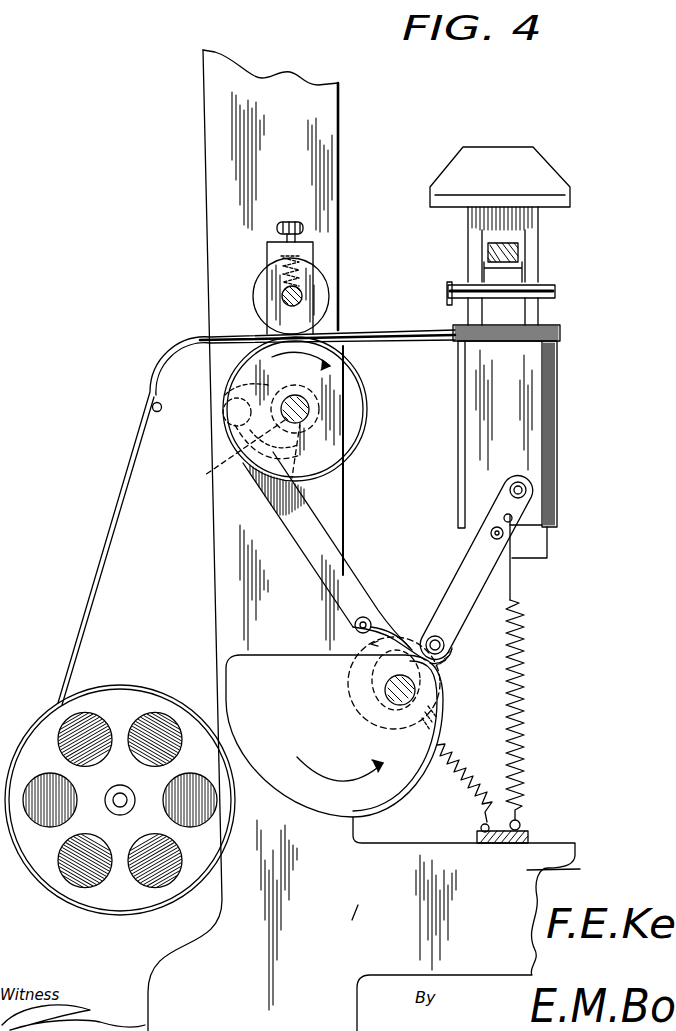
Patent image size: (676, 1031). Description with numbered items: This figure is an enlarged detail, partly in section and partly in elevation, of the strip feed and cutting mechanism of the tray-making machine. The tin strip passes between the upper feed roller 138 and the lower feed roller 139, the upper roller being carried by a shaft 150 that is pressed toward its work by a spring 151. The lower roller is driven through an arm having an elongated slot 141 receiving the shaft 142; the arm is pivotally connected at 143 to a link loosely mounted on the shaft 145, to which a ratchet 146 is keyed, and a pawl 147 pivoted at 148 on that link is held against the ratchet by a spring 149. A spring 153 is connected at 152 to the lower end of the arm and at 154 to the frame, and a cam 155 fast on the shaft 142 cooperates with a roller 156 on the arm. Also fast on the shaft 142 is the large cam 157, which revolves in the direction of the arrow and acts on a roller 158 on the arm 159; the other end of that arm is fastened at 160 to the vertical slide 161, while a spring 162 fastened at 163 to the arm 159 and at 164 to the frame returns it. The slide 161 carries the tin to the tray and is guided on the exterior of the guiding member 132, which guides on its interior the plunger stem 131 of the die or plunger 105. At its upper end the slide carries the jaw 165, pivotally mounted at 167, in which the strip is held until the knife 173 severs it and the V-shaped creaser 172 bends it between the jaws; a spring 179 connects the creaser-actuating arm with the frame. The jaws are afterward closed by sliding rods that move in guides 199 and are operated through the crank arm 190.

The die or plunger 105 is at (553, 168).
The plunger stem 131 is at (520, 218).
The guide 132 is at (558, 442).
The upper feed roller 138 is at (255, 296).
The lower feed roller 139 is at (333, 357).
The elongated slot 141 is at (385, 647).
The shaft 142 is at (387, 695).
The pivotal connection 143 is at (218, 422).
The shaft 145 is at (305, 405).
The ratchet 146 is at (322, 393).
The pawl 147 is at (222, 406).
The pivot 148 is at (232, 450).
The spring 149 is at (289, 450).
The shaft 150 is at (297, 293).
The spring 151 is at (262, 257).
The connection 152 is at (440, 715).
The spring 153 is at (478, 771).
The frame connection 154 is at (478, 828).
The cam 155 is at (367, 648).
The roller 156 is at (355, 626).
The large cam 157 is at (316, 797).
The roller 158 is at (455, 647).
The arm 159 is at (480, 573).
The fastening 160 is at (523, 490).
The vertical slide 161 is at (523, 388).
The spring 162 is at (523, 702).
The spring fastening 163 is at (550, 525).
The spring fastening 164 is at (520, 823).
The jaw 165 is at (560, 337).
The pivot 167 is at (507, 347).
The creaser 172 is at (533, 291).
The knife 173 is at (447, 297).
The spring 179 is at (530, 252).
The crank arm 190 is at (318, 535).
The guides 199 is at (237, 380).